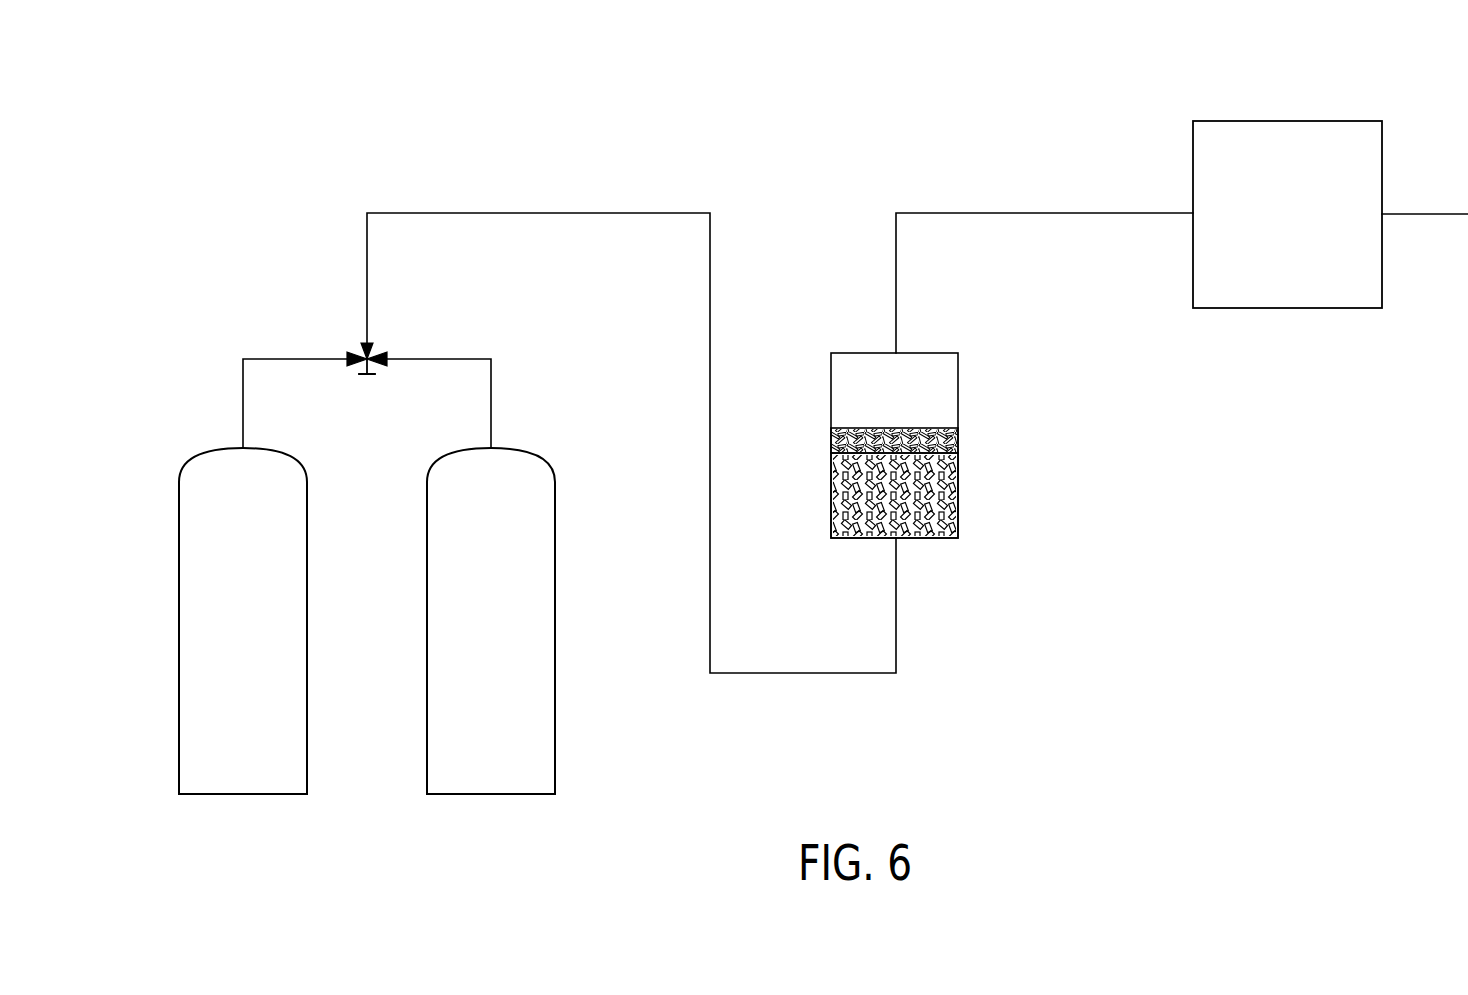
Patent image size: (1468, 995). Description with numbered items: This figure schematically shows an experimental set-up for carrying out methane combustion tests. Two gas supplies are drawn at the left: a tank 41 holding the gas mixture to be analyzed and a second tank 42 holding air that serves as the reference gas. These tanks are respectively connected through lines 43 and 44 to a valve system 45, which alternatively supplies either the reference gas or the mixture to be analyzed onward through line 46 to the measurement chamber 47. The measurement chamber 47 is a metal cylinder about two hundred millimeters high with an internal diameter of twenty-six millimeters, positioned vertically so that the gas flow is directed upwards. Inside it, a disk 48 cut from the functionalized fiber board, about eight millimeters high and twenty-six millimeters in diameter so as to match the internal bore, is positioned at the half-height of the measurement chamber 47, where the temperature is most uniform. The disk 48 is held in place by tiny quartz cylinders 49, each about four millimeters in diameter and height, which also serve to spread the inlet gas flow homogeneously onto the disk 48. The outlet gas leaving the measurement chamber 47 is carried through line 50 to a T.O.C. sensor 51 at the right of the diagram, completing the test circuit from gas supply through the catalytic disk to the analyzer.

The tank 41 is at (307, 570).
The second tank 42 is at (555, 598).
The line 43 is at (286, 359).
The line 44 is at (465, 359).
The valve system 45 is at (364, 343).
The line 46 is at (629, 213).
The measurement chamber 47 is at (872, 353).
The disk 48 is at (958, 437).
The quartz cylinders 49 is at (958, 497).
The line 50 is at (1076, 213).
The T.O.C. sensor 51 is at (1250, 121).